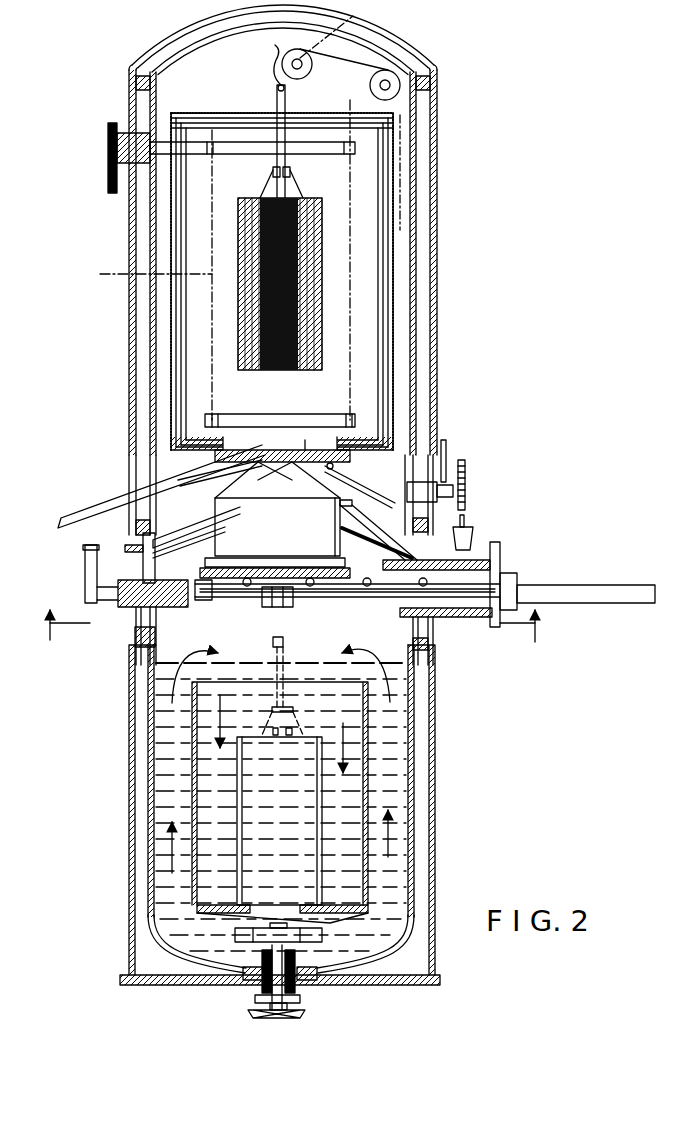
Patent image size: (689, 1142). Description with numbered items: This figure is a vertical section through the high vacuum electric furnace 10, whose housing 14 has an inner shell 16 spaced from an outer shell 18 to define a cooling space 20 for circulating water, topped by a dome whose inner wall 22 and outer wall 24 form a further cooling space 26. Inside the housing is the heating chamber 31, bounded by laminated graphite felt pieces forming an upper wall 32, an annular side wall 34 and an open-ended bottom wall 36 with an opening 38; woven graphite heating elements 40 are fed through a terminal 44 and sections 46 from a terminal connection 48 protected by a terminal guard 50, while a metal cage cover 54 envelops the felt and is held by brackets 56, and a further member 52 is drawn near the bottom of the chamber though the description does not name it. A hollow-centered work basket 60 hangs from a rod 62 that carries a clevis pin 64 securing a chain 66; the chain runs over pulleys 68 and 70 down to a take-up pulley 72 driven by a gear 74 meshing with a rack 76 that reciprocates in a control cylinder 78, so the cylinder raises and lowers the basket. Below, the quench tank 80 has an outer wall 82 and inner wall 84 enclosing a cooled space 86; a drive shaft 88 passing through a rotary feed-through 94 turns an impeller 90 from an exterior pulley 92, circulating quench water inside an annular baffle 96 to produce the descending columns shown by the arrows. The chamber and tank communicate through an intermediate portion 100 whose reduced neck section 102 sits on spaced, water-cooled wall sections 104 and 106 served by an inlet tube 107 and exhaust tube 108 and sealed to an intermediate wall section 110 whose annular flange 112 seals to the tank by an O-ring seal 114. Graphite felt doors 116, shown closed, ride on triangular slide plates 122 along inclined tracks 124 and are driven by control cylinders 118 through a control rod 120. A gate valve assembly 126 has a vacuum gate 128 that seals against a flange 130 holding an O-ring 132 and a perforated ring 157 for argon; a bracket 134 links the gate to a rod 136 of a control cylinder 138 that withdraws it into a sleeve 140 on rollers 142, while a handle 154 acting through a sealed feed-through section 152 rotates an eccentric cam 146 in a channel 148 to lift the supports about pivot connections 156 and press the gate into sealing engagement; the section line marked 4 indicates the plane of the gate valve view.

The high vacuum electric furnace 10 is at (470, 74).
The housing 14 is at (440, 255).
The inner shell 16 is at (420, 205).
The outer shell 18 is at (436, 225).
The cooling space 20 is at (420, 310).
The inner wall 22 is at (235, 37).
The outer wall 24 is at (395, 45).
The cooling space 26 is at (185, 30).
The heating chamber 31 is at (398, 182).
The upper wall 32 is at (228, 118).
The annular side wall 34 is at (176, 356).
The bottom wall 36 is at (213, 437).
The opening 38 is at (308, 440).
The heating elements 40 is at (453, 270).
The terminal 44 is at (178, 140).
The sections 46 is at (240, 154).
The terminal connection 48 is at (116, 155).
The terminal guard 50 is at (107, 140).
The bottom plate 52 is at (263, 420).
The cage cover 54 is at (385, 430).
The brackets 56 is at (150, 458).
The work basket 60 is at (322, 240).
The rod 62 is at (288, 97).
The clevis pin 64 is at (265, 58).
The chain 66 is at (335, 35).
The pulley 68 is at (313, 65).
The pulley 70 is at (398, 75).
The take-up pulley 72 is at (430, 470).
The gear 74 is at (465, 484).
The rack 76 is at (467, 502).
The control cylinder 78 is at (475, 540).
The quench tank 80 is at (438, 775).
The outer wall 82 is at (415, 830).
The inner wall 84 is at (412, 882).
The space 86 is at (128, 855).
The drive shaft 88 is at (265, 978).
The impeller 90 is at (335, 940).
The pulley 92 is at (290, 1018).
The rotary feed-through 94 is at (298, 975).
The annular baffle 96 is at (192, 765).
The intermediate portion 100 is at (115, 532).
The reduced neck section 102 is at (230, 512).
The wall section 104 is at (352, 520).
The wall section 106 is at (345, 528).
The inlet tube 107 is at (466, 522).
The exhaust tube 108 is at (122, 547).
The intermediate wall section 110 is at (143, 562).
The annular flange 112 is at (165, 625).
The O-ring seal 114 is at (168, 662).
The doors 116 is at (300, 452).
The control cylinders 118 is at (70, 520).
The control rod 120 is at (240, 467).
The triangular slide plates 122 is at (259, 479).
The inclined tracks 124 is at (340, 478).
The gate valve assembly 126 is at (505, 560).
The vacuum gate 128 is at (262, 598).
The flange 130 is at (220, 552).
The O-ring 132 is at (318, 590).
The bracket 134 is at (290, 588).
The rod 136 is at (365, 588).
The control cylinder 138 is at (558, 585).
The sleeve 140 is at (440, 617).
The rollers 142 is at (420, 588).
The eccentric cam 146 is at (156, 637).
The channel 148 is at (205, 600).
The sealed feed-through section 152 is at (128, 607).
The handle 154 is at (85, 575).
The pivot connections 156 is at (492, 620).
The perforated ring 157 is at (312, 568).
The section line 4 is at (291, 641).